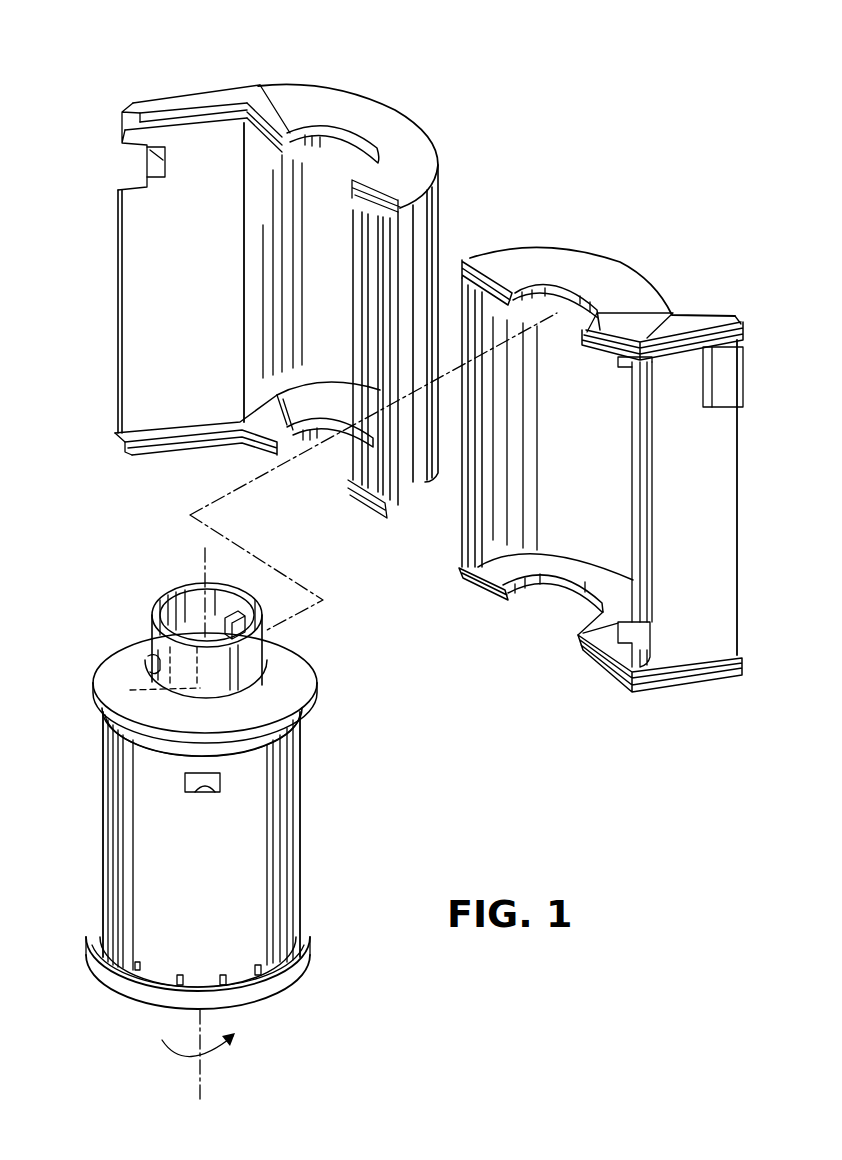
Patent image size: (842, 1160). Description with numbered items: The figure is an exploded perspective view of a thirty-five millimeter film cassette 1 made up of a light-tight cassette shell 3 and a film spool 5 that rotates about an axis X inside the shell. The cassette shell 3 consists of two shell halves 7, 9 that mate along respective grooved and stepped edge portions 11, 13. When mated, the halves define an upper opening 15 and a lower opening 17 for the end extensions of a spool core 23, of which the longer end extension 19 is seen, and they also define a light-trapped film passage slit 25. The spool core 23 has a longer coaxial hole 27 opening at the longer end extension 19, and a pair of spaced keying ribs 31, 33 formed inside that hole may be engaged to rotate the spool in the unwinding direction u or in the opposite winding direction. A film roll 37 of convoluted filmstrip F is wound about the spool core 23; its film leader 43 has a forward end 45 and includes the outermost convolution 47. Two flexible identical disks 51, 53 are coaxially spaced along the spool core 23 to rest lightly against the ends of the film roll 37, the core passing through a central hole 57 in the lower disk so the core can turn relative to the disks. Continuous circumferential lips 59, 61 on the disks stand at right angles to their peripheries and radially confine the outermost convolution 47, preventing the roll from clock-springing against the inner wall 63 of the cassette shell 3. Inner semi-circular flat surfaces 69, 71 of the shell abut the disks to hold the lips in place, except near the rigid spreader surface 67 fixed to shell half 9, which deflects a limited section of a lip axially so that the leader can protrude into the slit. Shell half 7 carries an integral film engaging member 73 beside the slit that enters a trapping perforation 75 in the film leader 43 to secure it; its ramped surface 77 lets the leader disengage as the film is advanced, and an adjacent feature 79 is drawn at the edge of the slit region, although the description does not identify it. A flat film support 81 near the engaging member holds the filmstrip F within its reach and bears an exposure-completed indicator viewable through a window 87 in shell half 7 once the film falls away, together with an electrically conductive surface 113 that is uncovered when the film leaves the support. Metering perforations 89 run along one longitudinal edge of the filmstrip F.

The film cassette 1 is at (230, 66).
The cassette shell 3 is at (527, 240).
The film spool 5 is at (312, 826).
The shell half 7 is at (380, 97).
The shell half 9 is at (617, 260).
The grooved and stepped edge portion 11 is at (193, 113).
The grooved and stepped edge portion 13 is at (463, 278).
The upper opening 15 is at (339, 162).
The lower opening 17 is at (577, 293).
The longer end extension 19 is at (150, 607).
The spool core 23 is at (250, 670).
The film passage slit 25 is at (137, 306).
The longer coaxial hole 27 is at (193, 593).
The keying rib 31 is at (233, 603).
The keying rib 33 is at (130, 690).
The film roll 37 is at (108, 798).
The film leader 43 is at (240, 907).
The forward end 45 is at (263, 921).
The outermost convolution 47 is at (170, 863).
The flexible disk 51 is at (328, 705).
The flexible disk 53 is at (98, 980).
The central hole 57 is at (148, 648).
The circumferential lip 59 is at (303, 743).
The circumferential lip 61 is at (143, 1000).
The inner wall 63 is at (312, 268).
The spreader surface 67 is at (650, 677).
The inner semi-circular flat surface 69 is at (352, 168).
The inner semi-circular flat surface 71 is at (317, 400).
The film engaging member 73 is at (157, 175).
The trapping perforation 75 is at (205, 792).
The ramped surface 77 is at (168, 160).
The latch notch 79 is at (150, 167).
The film support 81 is at (704, 380).
The window 87 is at (130, 178).
The metering perforations 89 is at (223, 985).
The electrically conductive surface 113 is at (745, 395).
The filmstrip F is at (308, 875).
The unwinding direction u is at (233, 1047).
The axis X is at (195, 1098).